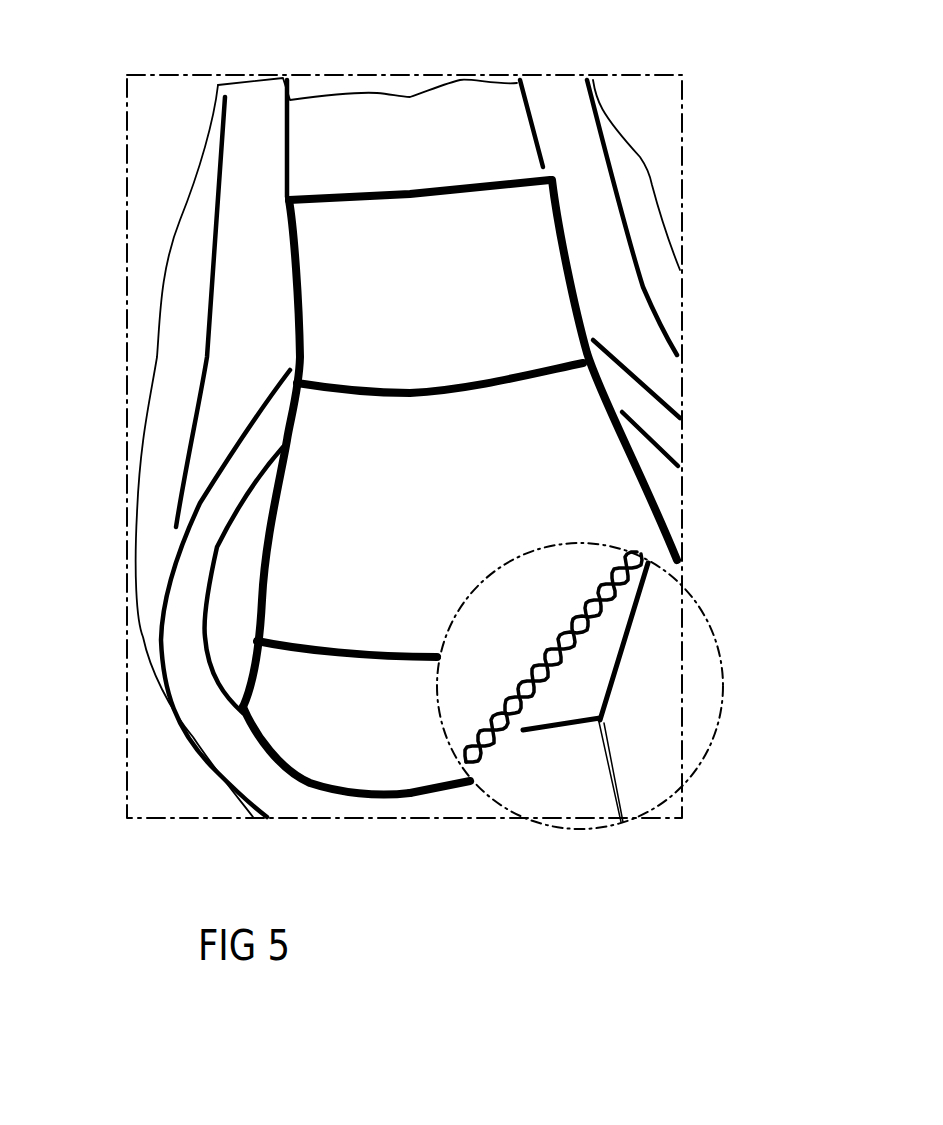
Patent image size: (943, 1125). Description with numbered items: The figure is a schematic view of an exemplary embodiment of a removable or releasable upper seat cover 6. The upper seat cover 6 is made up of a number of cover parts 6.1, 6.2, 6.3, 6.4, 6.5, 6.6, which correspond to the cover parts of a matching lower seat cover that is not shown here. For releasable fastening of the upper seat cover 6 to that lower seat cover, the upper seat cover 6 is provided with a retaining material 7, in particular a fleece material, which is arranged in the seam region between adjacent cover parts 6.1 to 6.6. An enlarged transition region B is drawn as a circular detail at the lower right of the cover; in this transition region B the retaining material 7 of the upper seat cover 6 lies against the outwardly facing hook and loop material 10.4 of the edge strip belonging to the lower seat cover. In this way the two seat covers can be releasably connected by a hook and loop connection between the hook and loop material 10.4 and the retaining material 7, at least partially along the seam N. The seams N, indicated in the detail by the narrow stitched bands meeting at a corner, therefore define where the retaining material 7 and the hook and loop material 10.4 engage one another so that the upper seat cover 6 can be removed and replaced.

The upper seat cover 6 is at (535, 267).
The cover part 6.1 is at (223, 596).
The cover part 6.2 is at (533, 567).
The cover part 6.3 is at (437, 223).
The cover part 6.4 is at (303, 753).
The cover part 6.5 is at (663, 493).
The cover part 6.6 is at (457, 803).
The retaining material 7 is at (590, 323).
The hook and loop material 10.4 is at (623, 647).
The transition region B is at (727, 677).
The seam N is at (610, 650).